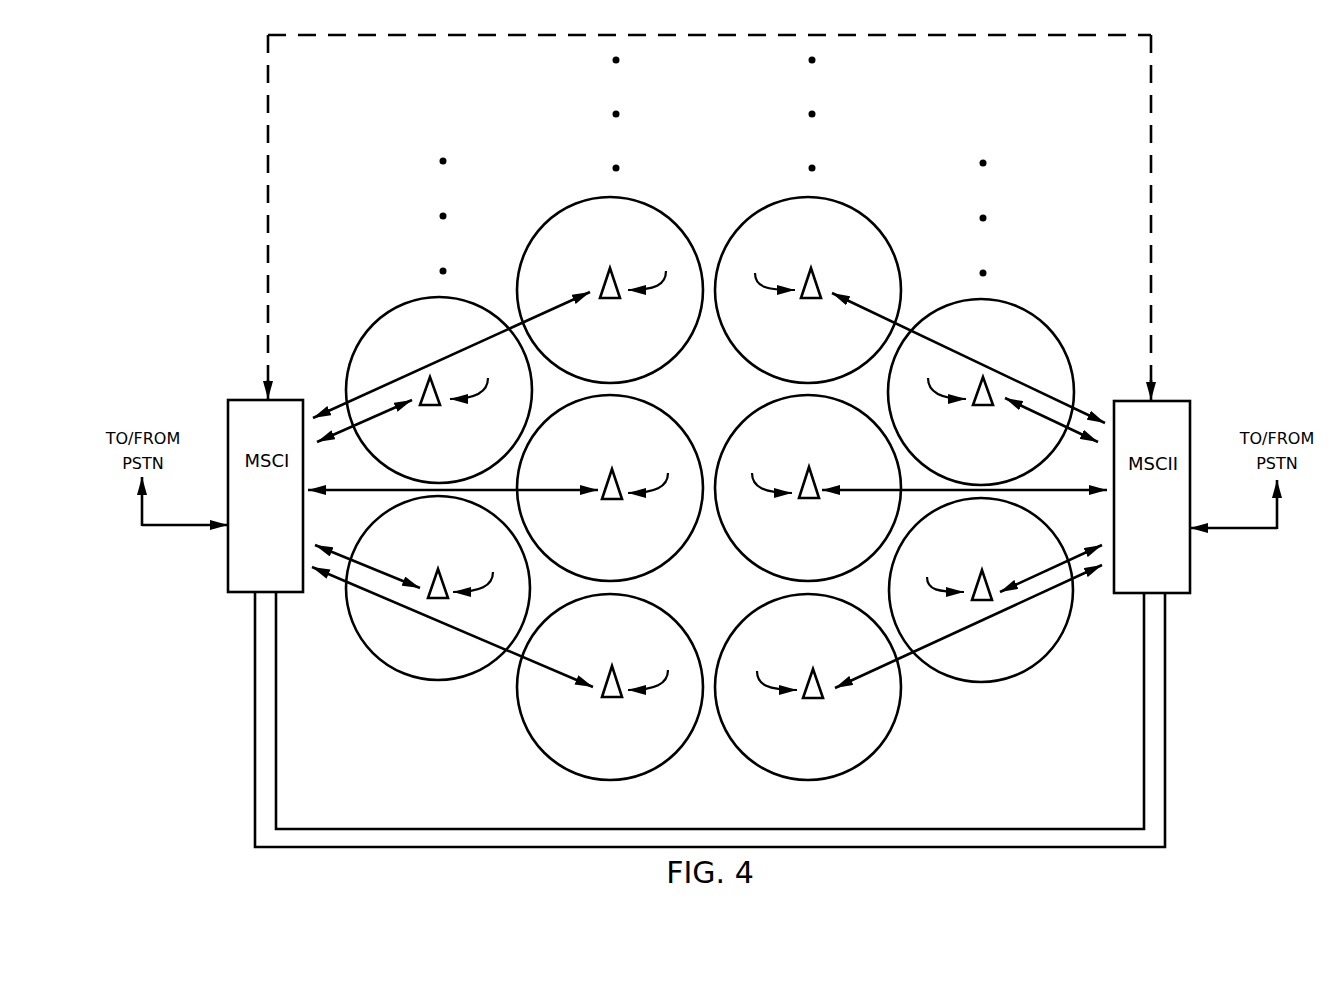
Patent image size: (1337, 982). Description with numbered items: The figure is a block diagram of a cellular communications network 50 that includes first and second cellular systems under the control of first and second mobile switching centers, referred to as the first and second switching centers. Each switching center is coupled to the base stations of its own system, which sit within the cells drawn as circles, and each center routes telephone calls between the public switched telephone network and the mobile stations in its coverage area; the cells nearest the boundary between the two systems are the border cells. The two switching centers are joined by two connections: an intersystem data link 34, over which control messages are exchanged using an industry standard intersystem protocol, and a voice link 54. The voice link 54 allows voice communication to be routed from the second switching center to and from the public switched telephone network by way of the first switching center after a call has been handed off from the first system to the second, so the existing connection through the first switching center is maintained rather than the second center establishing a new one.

The cellular communications network 50 is at (1228, 123).
The voice link 54 is at (1151, 246).
The intersystem data link 34 is at (1165, 716).